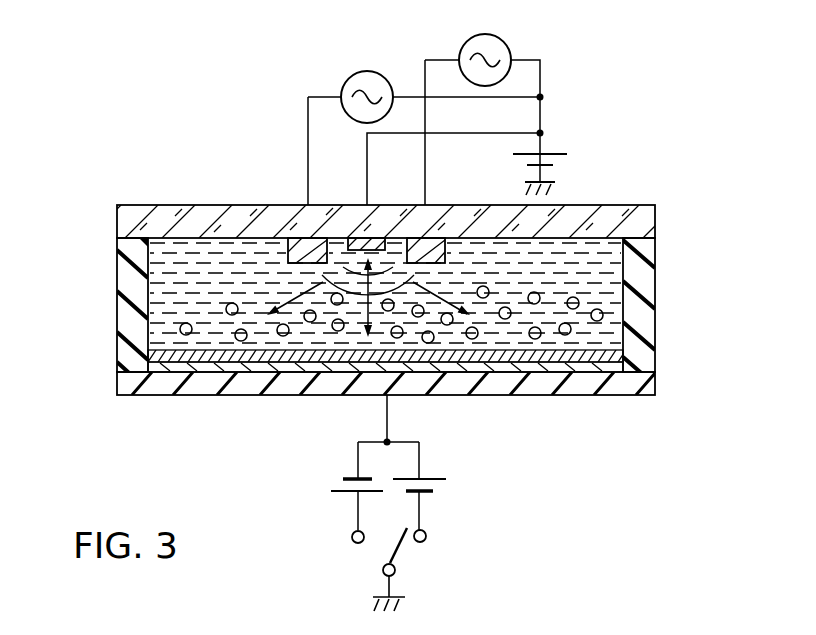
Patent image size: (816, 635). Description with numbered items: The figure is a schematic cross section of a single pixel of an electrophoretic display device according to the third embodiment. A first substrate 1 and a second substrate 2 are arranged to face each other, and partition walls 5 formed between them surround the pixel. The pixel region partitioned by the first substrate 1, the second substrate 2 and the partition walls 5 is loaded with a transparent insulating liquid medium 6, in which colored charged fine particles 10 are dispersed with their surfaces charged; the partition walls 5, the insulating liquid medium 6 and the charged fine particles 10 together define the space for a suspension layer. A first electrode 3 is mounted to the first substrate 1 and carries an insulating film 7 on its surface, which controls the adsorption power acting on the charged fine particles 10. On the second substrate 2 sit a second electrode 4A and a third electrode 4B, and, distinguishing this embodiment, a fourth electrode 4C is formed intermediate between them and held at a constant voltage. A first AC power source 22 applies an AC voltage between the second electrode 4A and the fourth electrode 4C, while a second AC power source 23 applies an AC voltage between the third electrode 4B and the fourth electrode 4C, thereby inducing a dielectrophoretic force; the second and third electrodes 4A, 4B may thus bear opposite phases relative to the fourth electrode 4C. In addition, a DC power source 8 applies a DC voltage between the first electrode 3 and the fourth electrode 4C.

The first substrate 1 is at (160, 390).
The second substrate 2 is at (118, 216).
The first electrode 3 is at (314, 372).
The second electrode 4A is at (300, 234).
The third electrode 4B is at (456, 212).
The fourth electrode 4C is at (342, 226).
The partition walls 5 is at (118, 327).
The insulating liquid medium 6 is at (593, 252).
The insulating film 7 is at (280, 364).
The DC power source 8 is at (441, 487).
The charged fine particles 10 is at (241, 342).
The first AC power source 22 is at (367, 71).
The second AC power source 23 is at (506, 44).